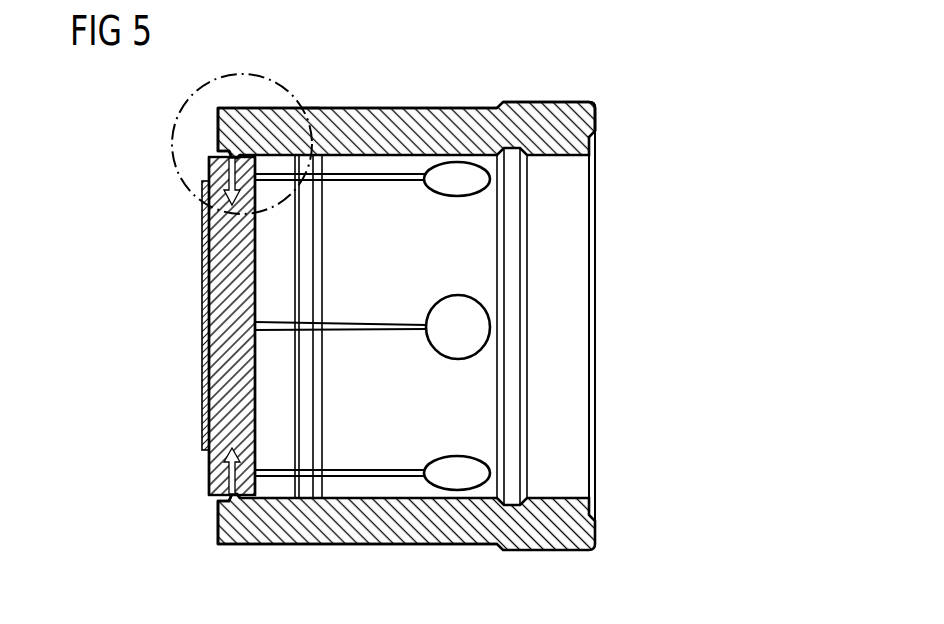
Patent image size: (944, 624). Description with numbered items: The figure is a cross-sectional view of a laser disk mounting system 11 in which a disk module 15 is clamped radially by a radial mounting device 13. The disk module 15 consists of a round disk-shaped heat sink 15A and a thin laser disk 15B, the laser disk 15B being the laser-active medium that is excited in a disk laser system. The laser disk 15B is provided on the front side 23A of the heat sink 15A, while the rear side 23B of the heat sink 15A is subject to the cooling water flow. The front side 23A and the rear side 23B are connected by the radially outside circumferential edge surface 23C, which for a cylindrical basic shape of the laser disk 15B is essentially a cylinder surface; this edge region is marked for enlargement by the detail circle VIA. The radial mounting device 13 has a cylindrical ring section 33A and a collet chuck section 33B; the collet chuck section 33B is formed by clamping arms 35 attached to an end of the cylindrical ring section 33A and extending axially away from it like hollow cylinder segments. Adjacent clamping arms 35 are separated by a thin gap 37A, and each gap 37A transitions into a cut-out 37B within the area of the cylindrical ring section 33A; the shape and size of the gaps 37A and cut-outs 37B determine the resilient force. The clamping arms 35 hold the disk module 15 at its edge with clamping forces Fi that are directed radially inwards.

The laser disk mounting system 11 is at (465, 98).
The radial mounting device 13 is at (208, 526).
The disk module 15 is at (190, 404).
The heat sink 15A is at (207, 352).
The laser disk 15B is at (202, 243).
The front side 23A is at (185, 302).
The rear side 23B is at (274, 251).
The circumferential edge surface 23C is at (211, 140).
The cylindrical ring section 33A is at (583, 95).
The collet chuck section 33B is at (328, 95).
The clamping arms 35 is at (408, 117).
The gap 37A is at (383, 332).
The cut-outs 37B is at (453, 297).
The clamping forces Fi is at (227, 181).
The detail region VIA is at (172, 136).